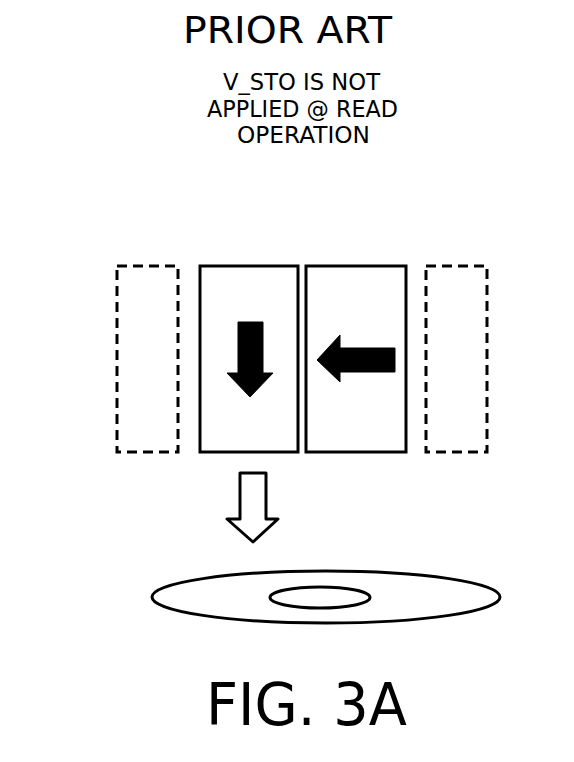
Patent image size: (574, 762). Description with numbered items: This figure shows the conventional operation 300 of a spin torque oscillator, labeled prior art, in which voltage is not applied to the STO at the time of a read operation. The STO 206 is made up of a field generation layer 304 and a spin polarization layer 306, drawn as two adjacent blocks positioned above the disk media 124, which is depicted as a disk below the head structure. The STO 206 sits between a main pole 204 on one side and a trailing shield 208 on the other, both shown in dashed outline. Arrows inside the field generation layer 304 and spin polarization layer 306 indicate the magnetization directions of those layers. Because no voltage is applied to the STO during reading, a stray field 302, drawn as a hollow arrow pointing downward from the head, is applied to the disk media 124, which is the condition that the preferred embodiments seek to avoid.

The spin torque oscillator (STO) 206 is at (240, 265).
The conventional operation 300 is at (318, 199).
The field generation layer (FGL) 304 is at (249, 332).
The spin polarization layer (SPL) 306 is at (356, 332).
The trailing shield (TS) 208 is at (147, 359).
The main pole (MP) 204 is at (456, 359).
The stray field 302 is at (388, 532).
The disk media 124 is at (281, 597).